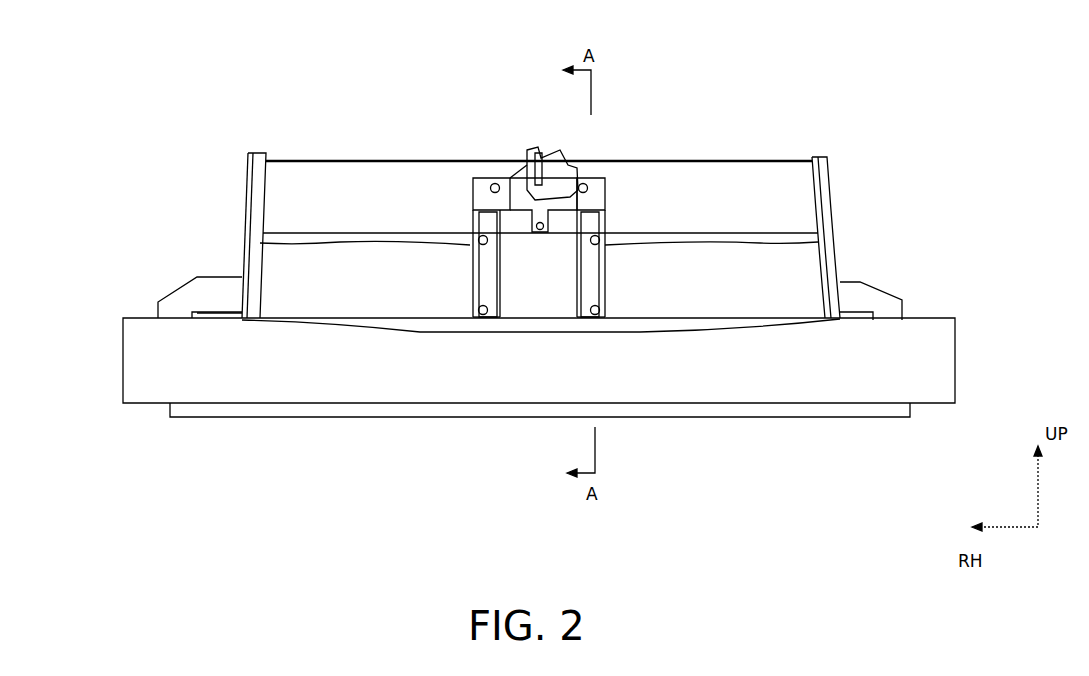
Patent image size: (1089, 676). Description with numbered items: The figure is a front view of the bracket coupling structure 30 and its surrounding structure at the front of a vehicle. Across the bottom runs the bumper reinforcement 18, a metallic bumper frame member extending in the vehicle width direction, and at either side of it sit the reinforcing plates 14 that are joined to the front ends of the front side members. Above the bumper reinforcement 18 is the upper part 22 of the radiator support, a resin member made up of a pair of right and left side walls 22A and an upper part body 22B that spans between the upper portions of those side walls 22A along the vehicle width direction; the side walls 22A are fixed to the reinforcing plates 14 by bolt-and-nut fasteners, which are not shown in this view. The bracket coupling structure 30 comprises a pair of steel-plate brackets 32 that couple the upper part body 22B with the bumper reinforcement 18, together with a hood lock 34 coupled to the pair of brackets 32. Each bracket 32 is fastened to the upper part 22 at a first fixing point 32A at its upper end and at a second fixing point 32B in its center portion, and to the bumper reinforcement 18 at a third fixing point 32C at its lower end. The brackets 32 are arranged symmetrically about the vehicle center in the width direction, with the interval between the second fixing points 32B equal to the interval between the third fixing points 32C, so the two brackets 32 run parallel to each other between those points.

The reinforcing plate 14 is at (195, 298).
The bumper reinforcement 18 is at (150, 362).
The upper part of the radiator support 22 is at (491, 198).
The side wall 22A is at (248, 200).
The upper part body 22B is at (345, 185).
The bracket coupling structure 30 is at (534, 238).
The bracket 32 is at (534, 251).
The first fixing point 32A is at (494, 172).
The second fixing point 32B is at (473, 312).
The third fixing point 32C is at (484, 335).
The hood lock 34 is at (530, 152).